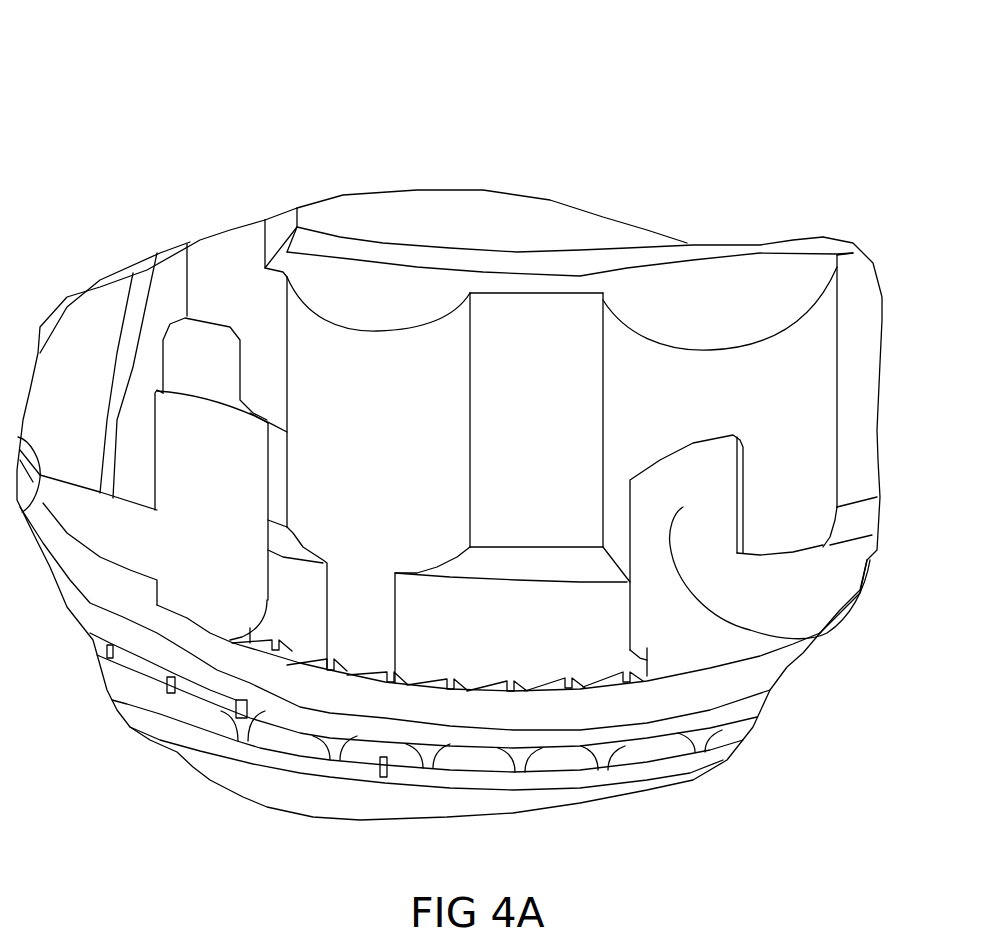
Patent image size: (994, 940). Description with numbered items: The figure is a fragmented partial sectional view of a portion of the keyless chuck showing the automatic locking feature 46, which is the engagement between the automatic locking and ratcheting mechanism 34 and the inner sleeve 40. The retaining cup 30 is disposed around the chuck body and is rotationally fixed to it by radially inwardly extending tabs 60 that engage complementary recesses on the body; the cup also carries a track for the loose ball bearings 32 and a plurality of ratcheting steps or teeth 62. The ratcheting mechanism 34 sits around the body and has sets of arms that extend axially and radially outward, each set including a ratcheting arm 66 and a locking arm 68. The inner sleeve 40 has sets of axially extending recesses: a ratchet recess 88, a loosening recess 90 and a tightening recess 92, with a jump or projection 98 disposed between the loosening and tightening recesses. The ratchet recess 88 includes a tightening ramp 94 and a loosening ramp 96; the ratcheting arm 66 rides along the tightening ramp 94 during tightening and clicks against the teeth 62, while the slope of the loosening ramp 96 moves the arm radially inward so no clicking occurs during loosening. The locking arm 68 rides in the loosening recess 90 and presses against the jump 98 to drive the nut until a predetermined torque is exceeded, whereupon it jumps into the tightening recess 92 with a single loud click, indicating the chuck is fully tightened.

The automatic locking feature 46 is at (243, 97).
The inner sleeve 40 is at (455, 213).
The loosening/opening recess 90 is at (352, 350).
The ratchet recess 88 is at (712, 397).
The tightening/closing ramp 94 is at (640, 380).
The loosening/opening ramp 96 is at (802, 390).
The jump or projection 98 is at (258, 378).
The tightening or closing recess 92 is at (188, 342).
The locking arm 68 is at (192, 437).
The tabs 60 is at (30, 497).
The ratcheting arm 66 is at (812, 643).
The automatic locking and ratcheting mechanism 34 is at (245, 672).
The ratcheting steps or teeth 62 is at (555, 687).
The loose ball bearings 32 is at (567, 757).
The retaining cup 30 is at (340, 775).